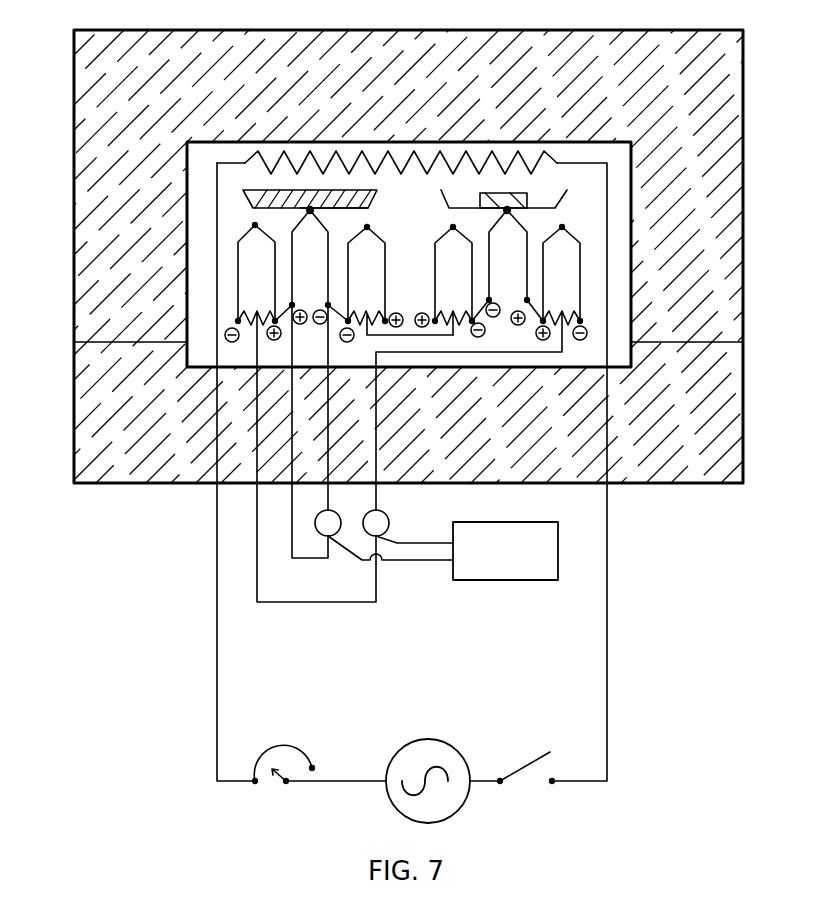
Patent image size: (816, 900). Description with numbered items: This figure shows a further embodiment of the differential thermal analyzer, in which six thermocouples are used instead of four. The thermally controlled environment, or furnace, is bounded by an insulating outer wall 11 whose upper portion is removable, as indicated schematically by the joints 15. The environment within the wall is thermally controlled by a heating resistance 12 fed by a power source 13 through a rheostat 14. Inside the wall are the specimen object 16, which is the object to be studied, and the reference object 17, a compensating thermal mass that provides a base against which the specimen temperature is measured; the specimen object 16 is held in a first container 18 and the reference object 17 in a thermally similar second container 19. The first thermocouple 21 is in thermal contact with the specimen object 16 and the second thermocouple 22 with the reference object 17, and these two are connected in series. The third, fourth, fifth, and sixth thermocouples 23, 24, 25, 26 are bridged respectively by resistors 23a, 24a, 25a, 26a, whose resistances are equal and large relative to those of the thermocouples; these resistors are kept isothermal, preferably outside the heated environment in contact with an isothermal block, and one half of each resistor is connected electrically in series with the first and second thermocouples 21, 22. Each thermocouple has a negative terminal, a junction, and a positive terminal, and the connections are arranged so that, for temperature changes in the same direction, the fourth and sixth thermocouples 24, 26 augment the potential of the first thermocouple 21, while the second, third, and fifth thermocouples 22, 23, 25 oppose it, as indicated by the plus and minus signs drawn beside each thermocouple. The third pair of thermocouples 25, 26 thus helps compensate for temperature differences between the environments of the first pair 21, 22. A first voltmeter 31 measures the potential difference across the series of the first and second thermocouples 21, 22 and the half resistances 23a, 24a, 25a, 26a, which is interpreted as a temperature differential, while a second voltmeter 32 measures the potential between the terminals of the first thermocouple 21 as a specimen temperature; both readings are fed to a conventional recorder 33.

The insulating outer wall 11 is at (732, 258).
The heating resistance 12 is at (417, 165).
The power source 13 is at (451, 754).
The rheostat 14 is at (294, 752).
The joints 15 is at (100, 343).
The specimen object 16 is at (318, 191).
The reference object 17 is at (508, 193).
The first container 18 is at (371, 206).
The second container 19 is at (446, 199).
The first thermocouple 21 is at (304, 228).
The second thermocouple 22 is at (508, 228).
The third thermocouple 23 is at (295, 405).
The resistor 23a is at (307, 432).
The fourth thermocouple 24 is at (485, 361).
The resistor 24a is at (478, 386).
The fifth thermocouple 25 is at (400, 280).
The resistor 25a is at (392, 253).
The sixth thermocouple 26 is at (440, 274).
The resistor 26a is at (453, 299).
The first voltmeter 31 is at (385, 510).
The second voltmeter 32 is at (330, 511).
The recorder 33 is at (493, 583).